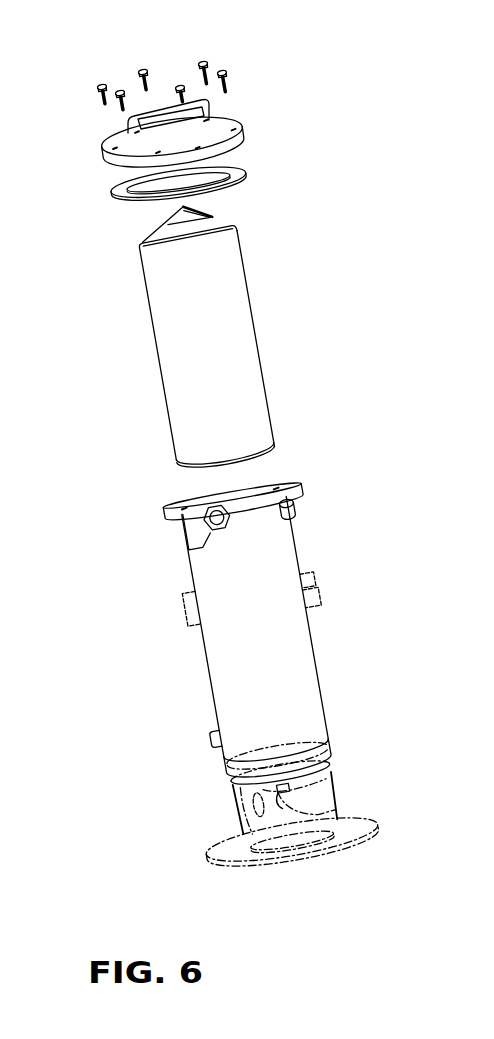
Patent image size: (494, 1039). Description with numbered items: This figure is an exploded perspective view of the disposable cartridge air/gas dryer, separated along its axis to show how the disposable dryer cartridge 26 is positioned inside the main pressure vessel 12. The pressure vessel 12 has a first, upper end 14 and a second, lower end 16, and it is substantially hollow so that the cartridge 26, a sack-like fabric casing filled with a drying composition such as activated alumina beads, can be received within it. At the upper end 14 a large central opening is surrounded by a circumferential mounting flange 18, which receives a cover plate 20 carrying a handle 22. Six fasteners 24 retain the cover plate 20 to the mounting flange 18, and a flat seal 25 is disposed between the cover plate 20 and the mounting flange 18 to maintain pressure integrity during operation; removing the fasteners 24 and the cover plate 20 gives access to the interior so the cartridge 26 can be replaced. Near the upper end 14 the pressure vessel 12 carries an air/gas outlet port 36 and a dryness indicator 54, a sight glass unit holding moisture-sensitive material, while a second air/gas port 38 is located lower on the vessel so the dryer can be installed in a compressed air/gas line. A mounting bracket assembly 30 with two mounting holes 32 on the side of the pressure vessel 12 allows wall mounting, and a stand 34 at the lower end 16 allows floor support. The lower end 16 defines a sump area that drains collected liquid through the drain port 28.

The main pressure vessel 12 is at (245, 639).
The first (upper) end 14 is at (226, 521).
The second (lower) end 16 is at (267, 817).
The circumferential mounting flange 18 is at (303, 492).
The cover plate 20 is at (241, 128).
The handle 22 is at (128, 122).
The fasteners 24 is at (203, 61).
The seal 25 is at (243, 172).
The dryer cartridge 26 is at (238, 312).
The drain port 28 is at (287, 788).
The mounting bracket assembly 30 is at (318, 608).
The mounting holes 32 is at (313, 582).
The stand 34 is at (342, 838).
The air/gas port (outlet port) 36 is at (297, 512).
The air/gas port 38 is at (212, 735).
The dryness indicator 54 is at (190, 545).